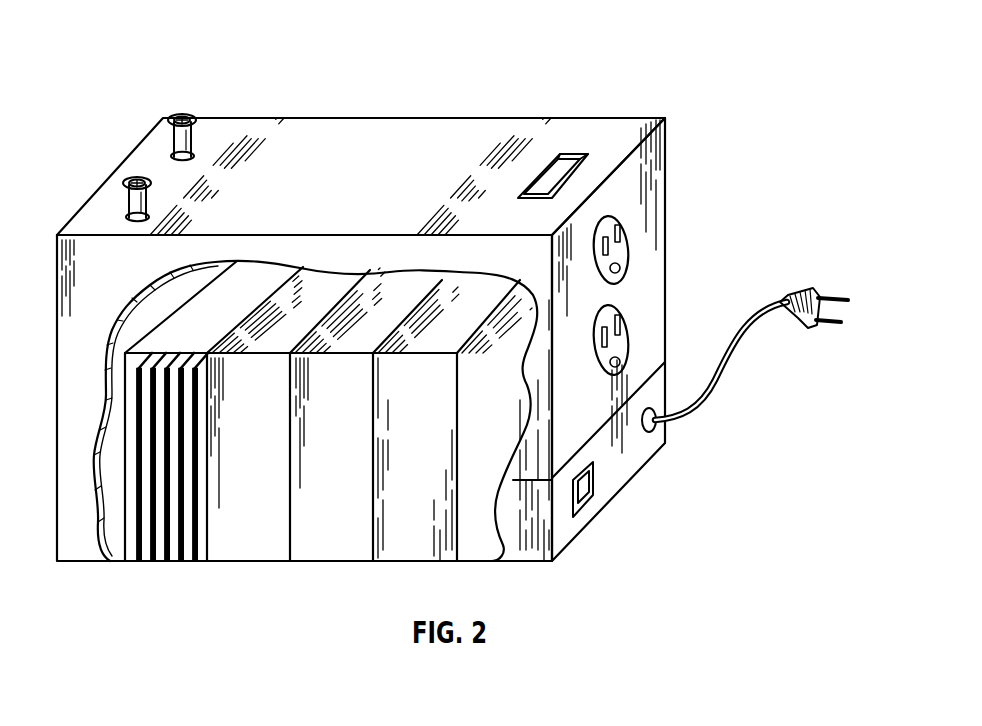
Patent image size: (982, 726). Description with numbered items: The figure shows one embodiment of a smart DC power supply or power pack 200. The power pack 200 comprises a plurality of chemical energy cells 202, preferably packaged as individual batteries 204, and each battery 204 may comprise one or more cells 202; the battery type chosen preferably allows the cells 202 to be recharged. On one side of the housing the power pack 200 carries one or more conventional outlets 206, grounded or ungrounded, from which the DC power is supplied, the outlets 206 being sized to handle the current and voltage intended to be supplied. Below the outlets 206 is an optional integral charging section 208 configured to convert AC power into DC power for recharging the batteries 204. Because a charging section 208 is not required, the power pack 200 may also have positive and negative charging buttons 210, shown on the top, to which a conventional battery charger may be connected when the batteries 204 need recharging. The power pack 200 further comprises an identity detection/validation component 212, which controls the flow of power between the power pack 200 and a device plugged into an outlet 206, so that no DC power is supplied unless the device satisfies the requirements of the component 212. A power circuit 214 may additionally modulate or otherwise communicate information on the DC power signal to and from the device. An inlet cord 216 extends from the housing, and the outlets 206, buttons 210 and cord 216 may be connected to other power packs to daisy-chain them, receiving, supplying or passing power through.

The smart power supply 200 is at (708, 78).
The chemical energy cells 202 is at (160, 558).
The batteries 204 is at (256, 519).
The outlets 206 is at (624, 240).
The integral charging section 208 is at (625, 468).
The charging buttons 210 is at (157, 151).
The identity detection/validation component 212 is at (563, 170).
The power circuit 214 is at (578, 497).
The inlet cord 216 is at (723, 382).